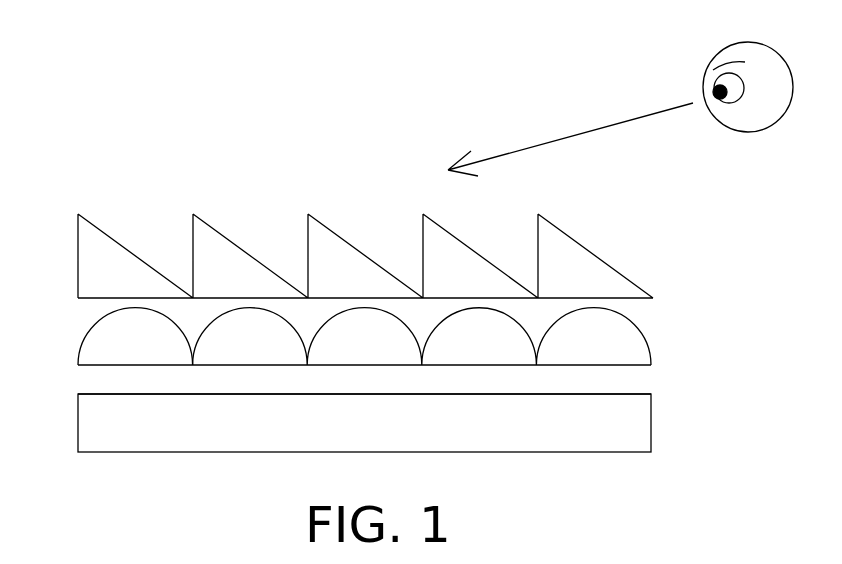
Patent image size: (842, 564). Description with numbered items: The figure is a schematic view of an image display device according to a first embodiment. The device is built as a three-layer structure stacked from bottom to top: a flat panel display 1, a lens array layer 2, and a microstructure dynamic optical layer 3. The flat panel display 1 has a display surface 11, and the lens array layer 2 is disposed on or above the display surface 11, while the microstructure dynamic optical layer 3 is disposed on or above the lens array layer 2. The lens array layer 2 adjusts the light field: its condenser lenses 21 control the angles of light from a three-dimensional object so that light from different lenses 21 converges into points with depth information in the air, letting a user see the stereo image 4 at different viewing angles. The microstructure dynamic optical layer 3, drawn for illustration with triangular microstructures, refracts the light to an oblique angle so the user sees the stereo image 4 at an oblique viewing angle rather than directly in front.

The flat panel display 1 is at (650, 426).
The display surface 11 is at (98, 393).
The lens array layer 2 is at (650, 345).
The lens 21 is at (108, 341).
The microstructure dynamic optical layer 3 is at (627, 275).
The stereo image 4 is at (374, 80).